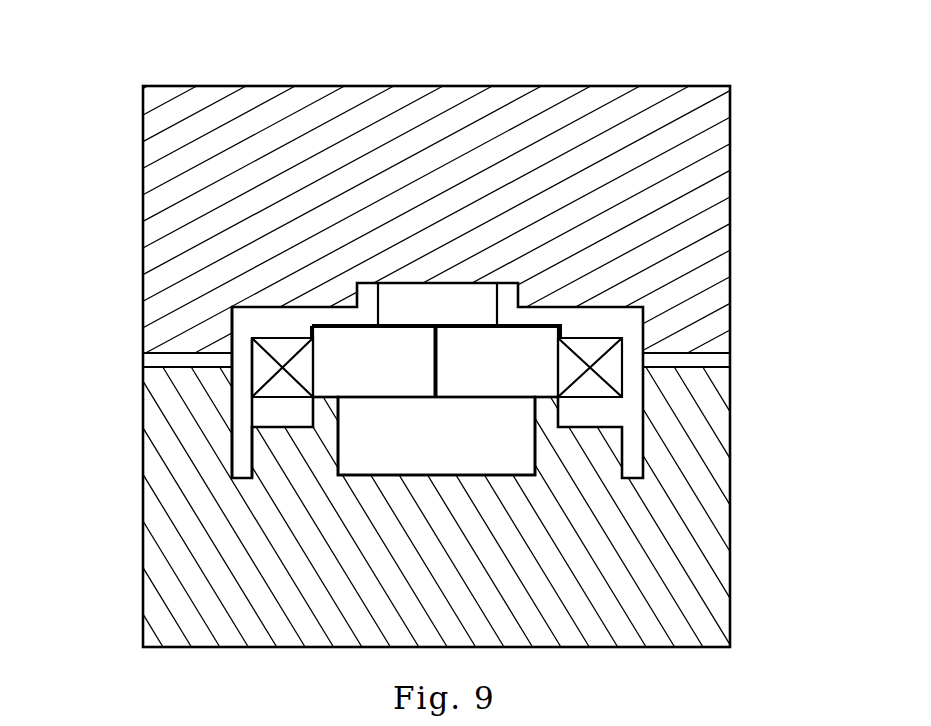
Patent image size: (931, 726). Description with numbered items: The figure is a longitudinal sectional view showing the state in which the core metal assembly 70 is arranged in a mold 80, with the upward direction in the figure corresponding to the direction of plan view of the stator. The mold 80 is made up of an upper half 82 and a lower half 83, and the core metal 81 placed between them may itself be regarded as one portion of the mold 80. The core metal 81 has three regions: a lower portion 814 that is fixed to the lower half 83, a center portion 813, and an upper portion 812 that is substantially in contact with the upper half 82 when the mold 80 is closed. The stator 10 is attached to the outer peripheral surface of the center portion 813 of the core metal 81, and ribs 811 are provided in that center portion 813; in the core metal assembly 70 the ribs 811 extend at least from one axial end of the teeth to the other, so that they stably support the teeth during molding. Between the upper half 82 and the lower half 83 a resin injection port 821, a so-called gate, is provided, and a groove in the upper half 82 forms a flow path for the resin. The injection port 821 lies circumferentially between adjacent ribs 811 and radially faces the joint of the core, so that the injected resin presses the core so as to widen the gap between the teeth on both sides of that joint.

The mold 80 is at (124, 57).
The upper half 82 is at (177, 215).
The lower half 83 is at (162, 500).
The core metal 81 is at (432, 407).
The ribs 811 is at (312, 332).
The resin injection port 821 is at (249, 360).
The upper portion 812 is at (483, 298).
The center portion 813 is at (530, 347).
The lower portion 814 is at (527, 408).
The stator 10 is at (590, 387).
The core metal assembly 70 is at (436, 380).